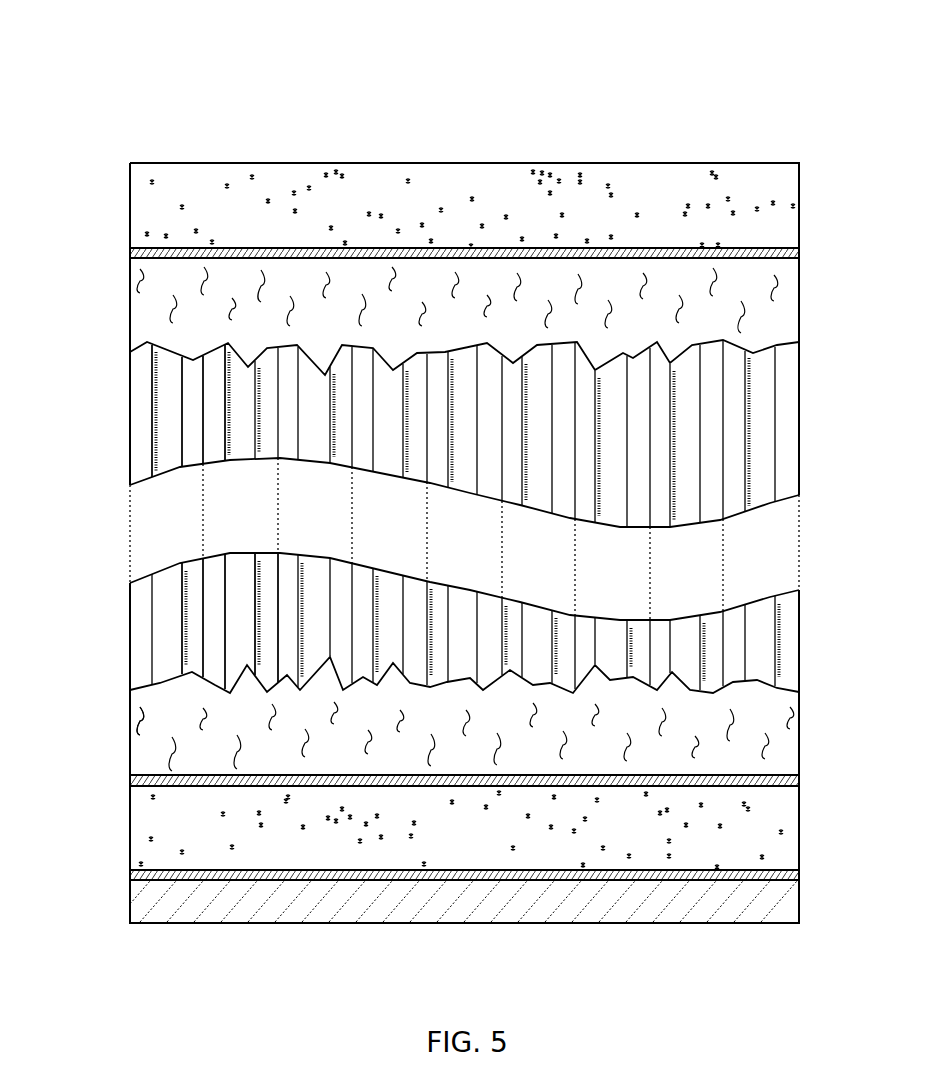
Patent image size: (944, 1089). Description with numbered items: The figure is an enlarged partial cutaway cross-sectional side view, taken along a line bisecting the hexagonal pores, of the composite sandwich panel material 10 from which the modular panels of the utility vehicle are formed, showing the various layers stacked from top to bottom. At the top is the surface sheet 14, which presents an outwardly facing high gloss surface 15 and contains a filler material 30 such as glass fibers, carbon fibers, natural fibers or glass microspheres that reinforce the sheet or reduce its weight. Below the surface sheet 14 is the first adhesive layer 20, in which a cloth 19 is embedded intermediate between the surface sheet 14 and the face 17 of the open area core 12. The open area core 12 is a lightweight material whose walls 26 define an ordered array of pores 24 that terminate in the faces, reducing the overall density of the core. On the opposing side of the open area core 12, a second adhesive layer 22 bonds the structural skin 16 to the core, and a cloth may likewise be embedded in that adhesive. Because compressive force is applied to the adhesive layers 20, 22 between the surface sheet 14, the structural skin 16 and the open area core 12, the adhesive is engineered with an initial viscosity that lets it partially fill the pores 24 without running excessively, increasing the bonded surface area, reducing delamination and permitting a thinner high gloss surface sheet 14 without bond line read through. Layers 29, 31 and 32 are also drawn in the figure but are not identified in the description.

The composite sandwich panel material 10 is at (672, 100).
The open area core 12 is at (800, 425).
The surface sheet 14 is at (800, 205).
The high gloss surface 15 is at (752, 162).
The structural skin 16 is at (800, 826).
The face 17 is at (146, 247).
The cloth 19 is at (147, 264).
The first adhesive layer 20 is at (800, 299).
The second adhesive layer 22 is at (800, 729).
The pores 24 is at (228, 400).
The walls 26 is at (278, 620).
The base layer 29 is at (130, 893).
The filler material 30 is at (148, 206).
The lower adhesive layer 31 is at (800, 874).
The intermediate layer surface 32 is at (140, 710).